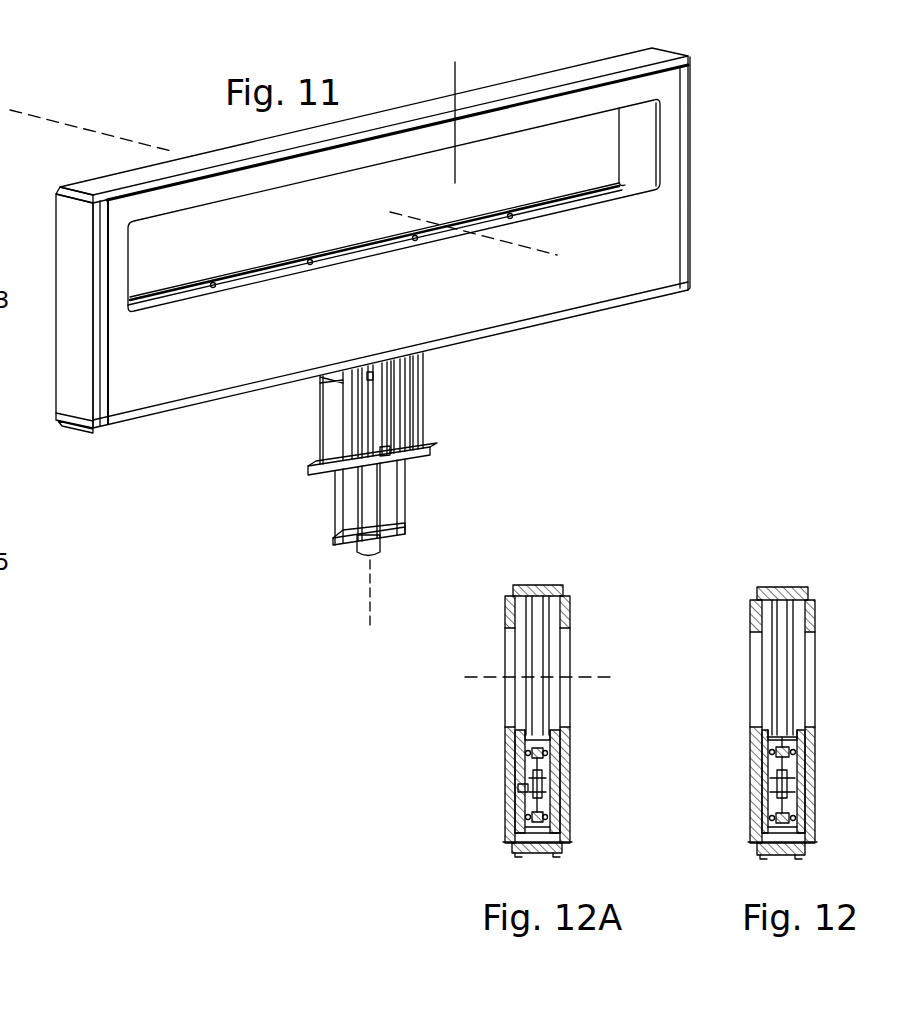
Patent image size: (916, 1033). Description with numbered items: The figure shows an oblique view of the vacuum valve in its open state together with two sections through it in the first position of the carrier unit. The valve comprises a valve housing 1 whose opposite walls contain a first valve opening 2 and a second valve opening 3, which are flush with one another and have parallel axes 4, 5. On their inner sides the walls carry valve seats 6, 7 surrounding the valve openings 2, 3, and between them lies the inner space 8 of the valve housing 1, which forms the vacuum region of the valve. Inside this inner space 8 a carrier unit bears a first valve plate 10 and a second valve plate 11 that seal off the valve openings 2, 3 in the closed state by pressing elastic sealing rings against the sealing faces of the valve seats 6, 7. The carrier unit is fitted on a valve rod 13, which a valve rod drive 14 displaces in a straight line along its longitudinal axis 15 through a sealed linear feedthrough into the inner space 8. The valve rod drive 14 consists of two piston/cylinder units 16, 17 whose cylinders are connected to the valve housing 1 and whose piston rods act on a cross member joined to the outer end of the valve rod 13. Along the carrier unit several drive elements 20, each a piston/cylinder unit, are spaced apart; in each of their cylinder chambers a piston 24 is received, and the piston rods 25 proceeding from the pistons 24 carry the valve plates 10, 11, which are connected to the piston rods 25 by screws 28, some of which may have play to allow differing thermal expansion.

In FIG. 11, the valve housing 1 is at (645, 243).
In FIG. 12A, the valve housing 1 is at (510, 815).
In FIG. 12, the valve housing 1 is at (812, 618).
In FIG. 11, the first valve opening 2 is at (455, 100).
In FIG. 12A, the first valve opening 2 is at (508, 700).
In FIG. 12, the first valve opening 2 is at (752, 700).
In FIG. 12A, the second valve opening 3 is at (567, 700).
In FIG. 12, the second valve opening 3 is at (808, 700).
In FIG. 11, the axis 4 is at (68, 127).
In FIG. 12A, the axis 4 is at (470, 677).
In FIG. 11, the axis 5 is at (527, 248).
In FIG. 12A, the axis 5 is at (600, 673).
In FIG. 12A, the valve seat 6 is at (515, 623).
In FIG. 12A, the valve seat 7 is at (560, 623).
In FIG. 12, the inner space 8 is at (763, 627).
In FIG. 12A, the first valve plate 10 is at (518, 828).
In FIG. 12A, the second valve plate 11 is at (557, 823).
In FIG. 11, the valve rod 13 is at (368, 500).
In FIG. 11, the valve rod drive 14 is at (360, 489).
In FIG. 11, the longitudinal axis 15 is at (370, 588).
In FIG. 11, the piston/cylinder unit 16 is at (343, 433).
In FIG. 11, the piston/cylinder unit 17 is at (408, 420).
In FIG. 12A, the drive element 20 is at (556, 812).
In FIG. 12A, the piston 24 is at (540, 775).
In FIG. 12A, the piston rod 25 is at (523, 785).
In FIG. 12A, the screw 28 is at (520, 788).